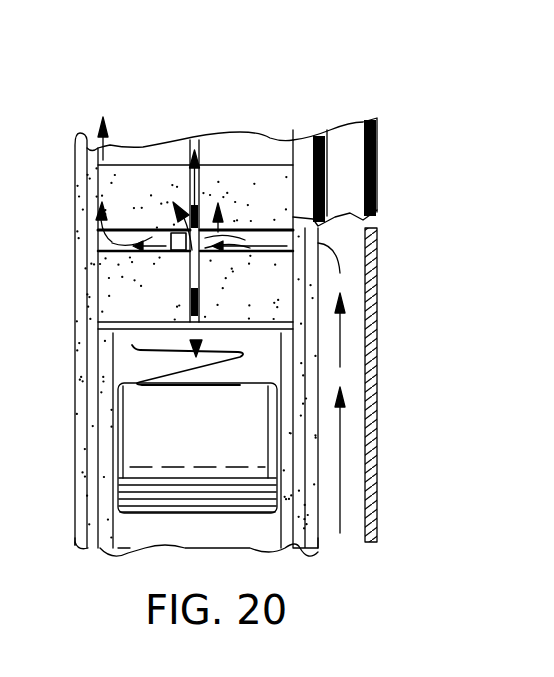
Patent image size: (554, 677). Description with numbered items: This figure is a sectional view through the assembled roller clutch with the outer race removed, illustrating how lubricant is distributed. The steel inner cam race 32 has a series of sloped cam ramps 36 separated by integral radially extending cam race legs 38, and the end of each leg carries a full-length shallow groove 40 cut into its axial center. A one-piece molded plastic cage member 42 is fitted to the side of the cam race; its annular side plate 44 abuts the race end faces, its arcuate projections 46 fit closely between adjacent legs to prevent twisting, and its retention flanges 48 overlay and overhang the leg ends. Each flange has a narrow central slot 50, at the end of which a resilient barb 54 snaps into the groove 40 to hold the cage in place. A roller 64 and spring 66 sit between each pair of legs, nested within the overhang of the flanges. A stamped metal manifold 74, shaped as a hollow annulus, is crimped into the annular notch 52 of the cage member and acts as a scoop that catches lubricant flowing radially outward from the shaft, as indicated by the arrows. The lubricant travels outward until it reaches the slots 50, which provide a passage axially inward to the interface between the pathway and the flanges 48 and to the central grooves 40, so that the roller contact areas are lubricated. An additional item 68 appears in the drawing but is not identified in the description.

The inner cam race 32 is at (128, 570).
The cam ramps 36 is at (256, 148).
The cam race legs 38 is at (110, 252).
The groove 40 is at (195, 268).
The cage member 42 is at (88, 552).
The side plate 44 is at (125, 456).
The projections 46 is at (113, 497).
The retention flanges 48 is at (167, 170).
The slot 50 is at (133, 225).
The annular notch 52 is at (283, 452).
The barb 54 is at (178, 257).
The roller 64 is at (162, 475).
The spring 66 is at (148, 360).
The flow direction arrow 68 is at (204, 108).
The manifold 74 is at (347, 148).